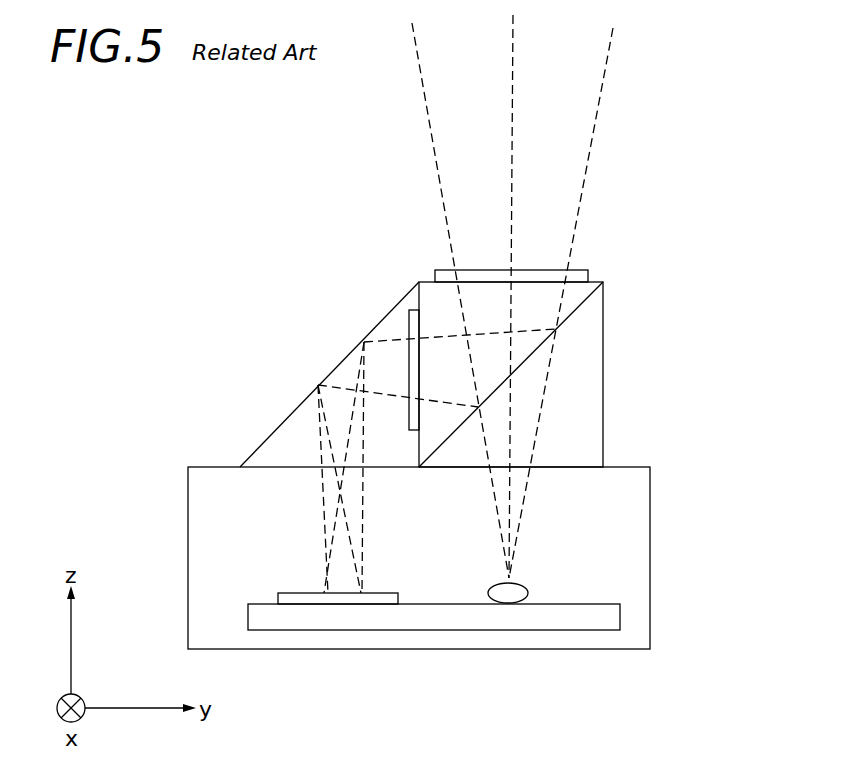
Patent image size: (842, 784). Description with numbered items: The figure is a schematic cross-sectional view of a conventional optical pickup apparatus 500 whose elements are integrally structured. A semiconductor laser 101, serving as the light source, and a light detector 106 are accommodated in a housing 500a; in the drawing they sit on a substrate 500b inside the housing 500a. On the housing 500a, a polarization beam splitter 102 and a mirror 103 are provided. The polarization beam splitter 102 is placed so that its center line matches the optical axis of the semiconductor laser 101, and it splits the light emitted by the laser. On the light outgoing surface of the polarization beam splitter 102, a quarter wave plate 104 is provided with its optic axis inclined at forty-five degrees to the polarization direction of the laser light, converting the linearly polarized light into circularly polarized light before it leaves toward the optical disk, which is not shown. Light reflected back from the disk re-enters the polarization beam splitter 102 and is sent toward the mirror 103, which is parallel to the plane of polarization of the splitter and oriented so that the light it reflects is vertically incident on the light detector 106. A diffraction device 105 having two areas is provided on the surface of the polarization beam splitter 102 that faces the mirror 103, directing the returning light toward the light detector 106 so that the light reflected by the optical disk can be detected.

The optical pickup apparatus 500 is at (246, 256).
The housing 500a is at (650, 498).
The substrate 500b is at (575, 620).
The semiconductor laser 101 is at (527, 588).
The polarization beam splitter 102 is at (603, 365).
The mirror 103 is at (288, 417).
The ¼ wave plate 104 is at (582, 266).
The diffraction device 105 is at (409, 315).
The light detector 106 is at (277, 598).